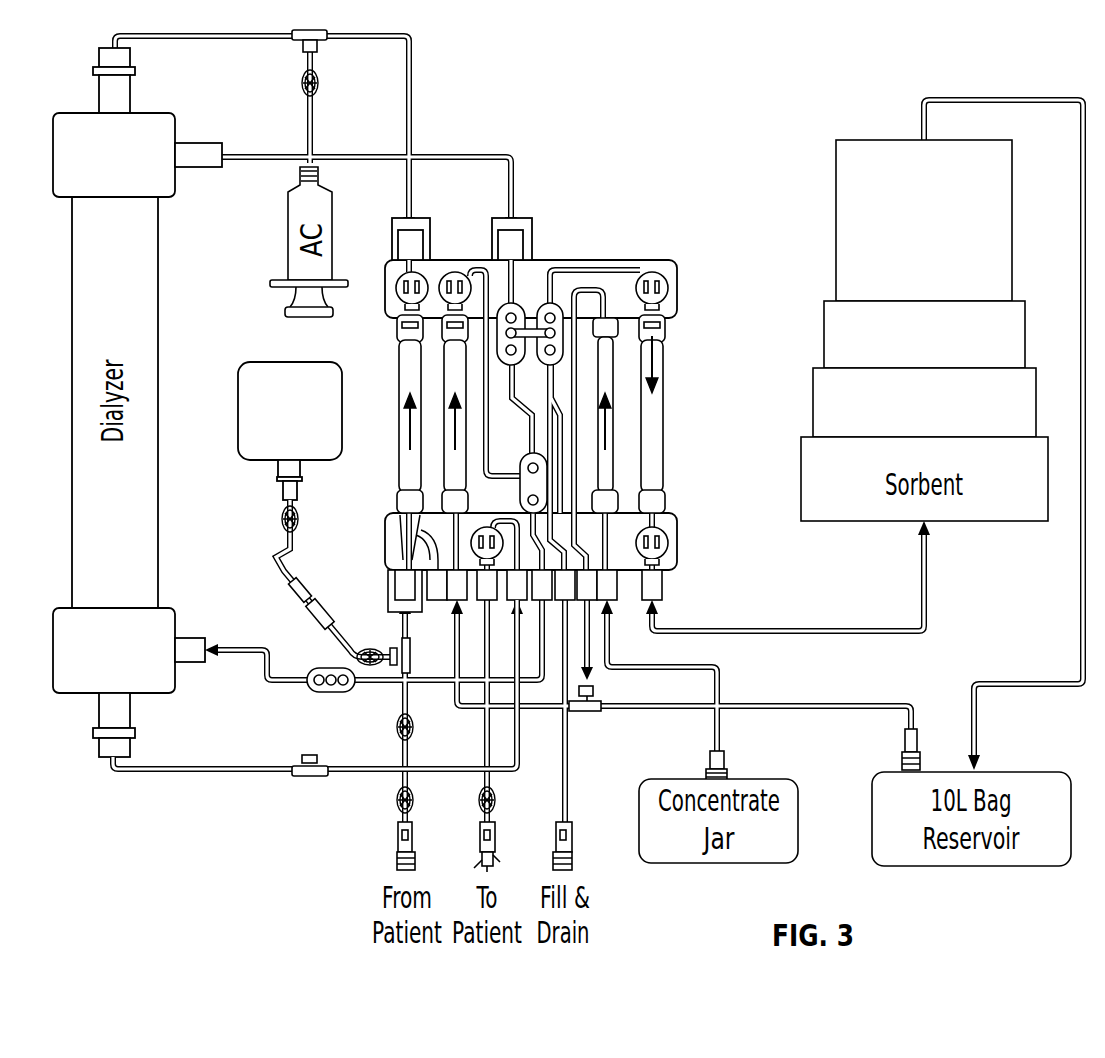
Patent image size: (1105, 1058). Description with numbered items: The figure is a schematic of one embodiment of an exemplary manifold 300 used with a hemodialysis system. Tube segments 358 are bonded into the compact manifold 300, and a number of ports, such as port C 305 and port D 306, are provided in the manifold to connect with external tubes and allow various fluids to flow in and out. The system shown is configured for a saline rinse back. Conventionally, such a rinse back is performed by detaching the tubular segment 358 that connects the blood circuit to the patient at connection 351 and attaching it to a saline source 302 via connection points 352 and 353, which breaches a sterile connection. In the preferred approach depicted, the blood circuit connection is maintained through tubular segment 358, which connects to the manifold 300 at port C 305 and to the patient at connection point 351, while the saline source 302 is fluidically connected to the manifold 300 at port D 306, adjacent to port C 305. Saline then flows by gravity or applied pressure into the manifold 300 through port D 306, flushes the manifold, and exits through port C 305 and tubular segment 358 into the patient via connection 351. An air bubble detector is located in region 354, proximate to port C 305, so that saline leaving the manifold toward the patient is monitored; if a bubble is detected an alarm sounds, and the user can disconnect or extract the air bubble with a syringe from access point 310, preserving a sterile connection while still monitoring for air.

The manifold 300 is at (533, 415).
The saline source 302 is at (288, 360).
The port C 305 is at (400, 566).
The port D 306 is at (386, 518).
The access point 310 is at (396, 735).
The connection 351 is at (396, 802).
The connection point 352 is at (275, 552).
The connection point 353 is at (412, 658).
The region 354 is at (390, 592).
The tube segments 358 is at (396, 778).